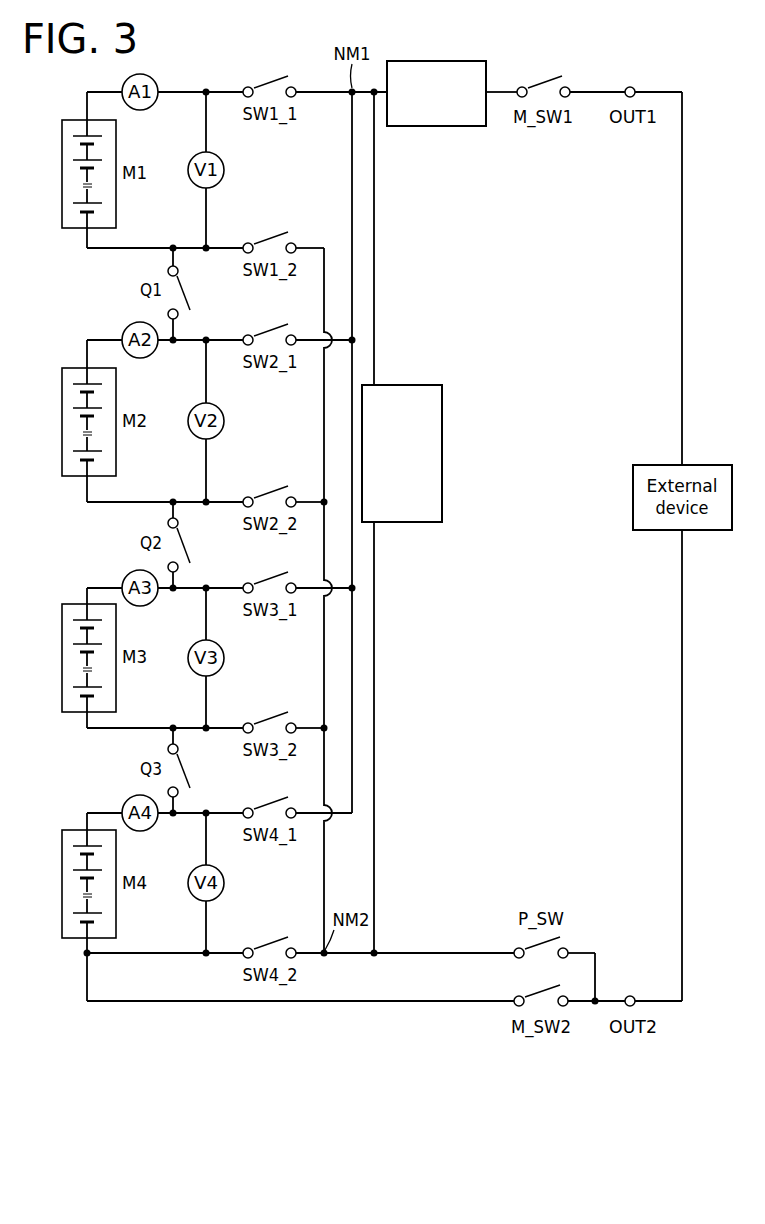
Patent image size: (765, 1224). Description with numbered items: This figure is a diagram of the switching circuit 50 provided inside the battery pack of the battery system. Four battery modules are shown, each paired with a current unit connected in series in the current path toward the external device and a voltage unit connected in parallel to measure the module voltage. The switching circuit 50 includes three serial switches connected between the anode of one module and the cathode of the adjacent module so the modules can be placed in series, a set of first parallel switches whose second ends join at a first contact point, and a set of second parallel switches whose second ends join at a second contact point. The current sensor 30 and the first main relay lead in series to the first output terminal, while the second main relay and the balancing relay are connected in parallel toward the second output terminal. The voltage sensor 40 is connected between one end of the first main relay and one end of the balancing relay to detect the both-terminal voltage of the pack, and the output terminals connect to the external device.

The current sensor 30 is at (437, 61).
The voltage sensor 40 is at (442, 396).
The switching circuit 50 is at (608, 1067).